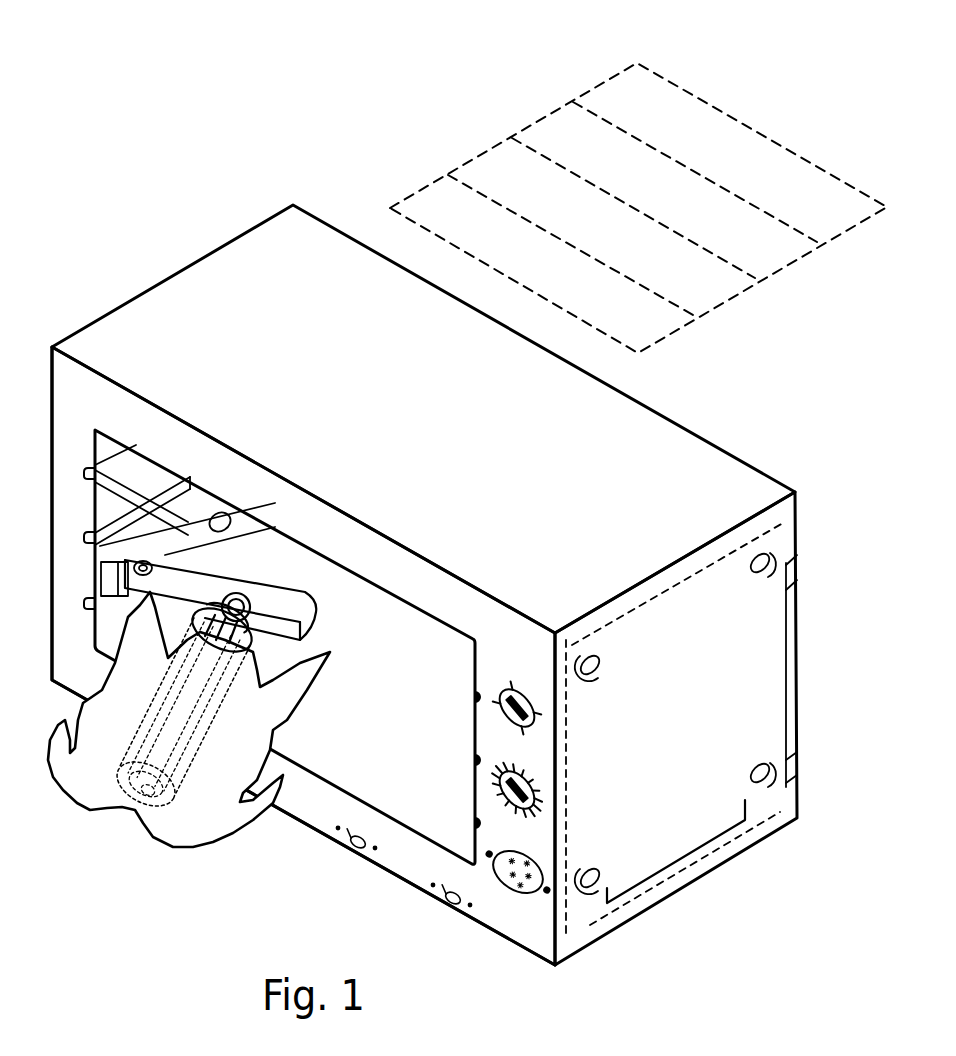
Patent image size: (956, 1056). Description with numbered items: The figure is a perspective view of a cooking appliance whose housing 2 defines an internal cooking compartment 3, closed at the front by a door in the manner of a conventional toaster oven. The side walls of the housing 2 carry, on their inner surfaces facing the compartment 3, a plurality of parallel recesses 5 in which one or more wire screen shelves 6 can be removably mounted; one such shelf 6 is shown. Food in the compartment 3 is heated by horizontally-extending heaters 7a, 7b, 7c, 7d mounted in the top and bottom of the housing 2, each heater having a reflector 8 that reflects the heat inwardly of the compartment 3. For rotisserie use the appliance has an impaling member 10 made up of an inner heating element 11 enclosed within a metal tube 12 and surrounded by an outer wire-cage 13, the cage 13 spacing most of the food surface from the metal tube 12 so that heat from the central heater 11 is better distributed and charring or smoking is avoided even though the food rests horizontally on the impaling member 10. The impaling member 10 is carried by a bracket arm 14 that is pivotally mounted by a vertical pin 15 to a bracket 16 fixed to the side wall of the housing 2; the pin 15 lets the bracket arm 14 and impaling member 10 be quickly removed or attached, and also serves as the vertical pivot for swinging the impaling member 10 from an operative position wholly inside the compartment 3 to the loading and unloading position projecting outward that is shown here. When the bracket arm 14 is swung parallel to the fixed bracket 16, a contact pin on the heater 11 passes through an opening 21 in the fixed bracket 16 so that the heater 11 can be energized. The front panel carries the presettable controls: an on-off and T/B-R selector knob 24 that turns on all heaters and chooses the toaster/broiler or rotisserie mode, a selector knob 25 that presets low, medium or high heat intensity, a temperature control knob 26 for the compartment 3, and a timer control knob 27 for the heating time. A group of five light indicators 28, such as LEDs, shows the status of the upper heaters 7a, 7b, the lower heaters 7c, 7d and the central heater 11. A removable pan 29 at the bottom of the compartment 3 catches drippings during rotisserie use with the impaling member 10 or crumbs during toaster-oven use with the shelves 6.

The housing 2 is at (284, 198).
The internal cooking compartment 3 is at (397, 765).
The parallel recesses 5 is at (90, 473).
The wire screen shelf 6 is at (716, 98).
The heater 7a is at (600, 668).
The heater 7b is at (758, 577).
The heater 7c is at (595, 867).
The heater 7d is at (753, 765).
The reflector 8 is at (590, 655).
The impaling member 10 is at (100, 781).
The inner heating element 11 is at (140, 795).
The metal tube 12 is at (150, 792).
The outer wire-cage 13 is at (196, 745).
The bracket arm 14 is at (312, 620).
The vertical pin 15 is at (145, 562).
The bracket 16 is at (207, 500).
The opening 21 is at (232, 512).
The on-off and T/B-R selector knob 24 is at (358, 850).
The selector knob 25 is at (453, 907).
The temperature control knob 26 is at (518, 690).
The timer control knob 27 is at (546, 792).
The light indicators 28 is at (520, 893).
The removable pan 29 is at (680, 862).